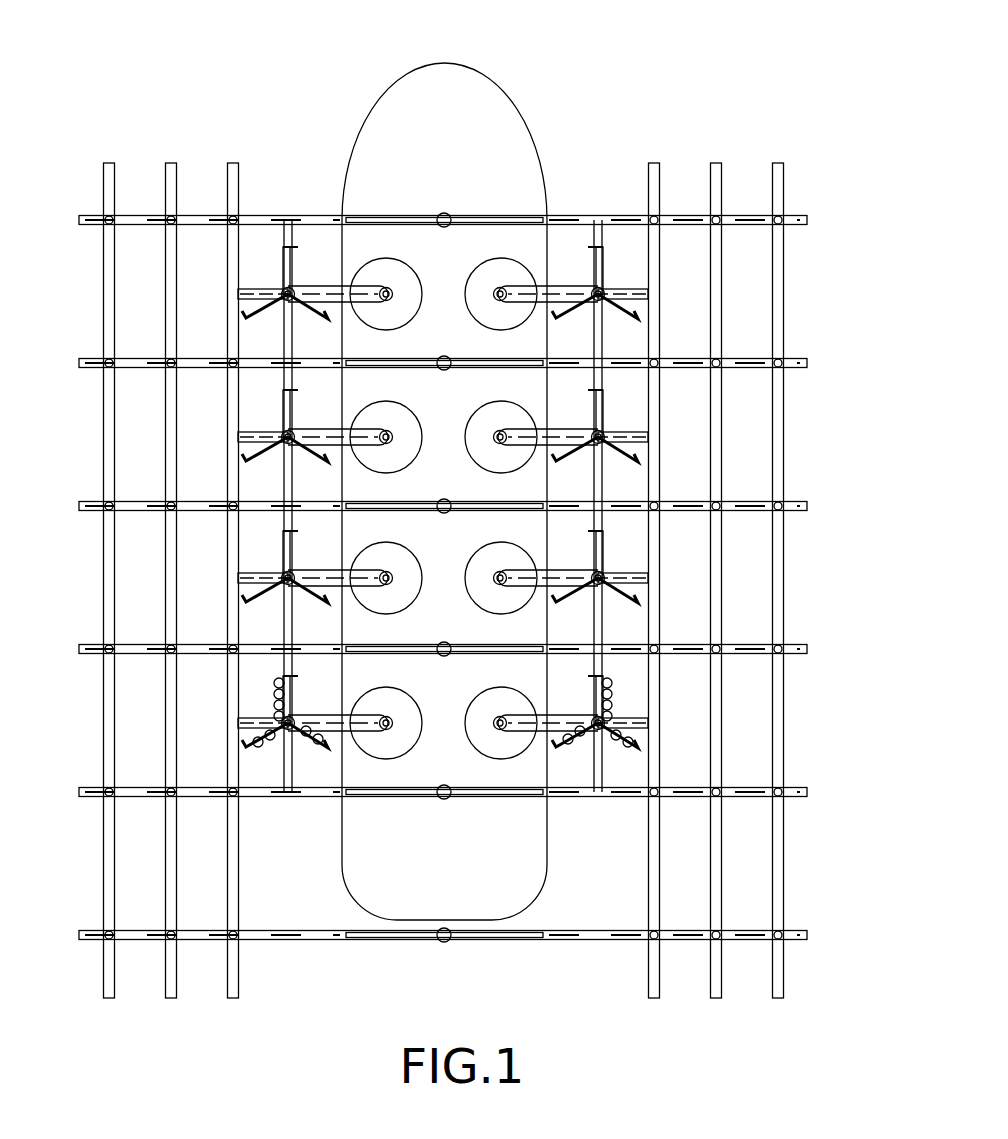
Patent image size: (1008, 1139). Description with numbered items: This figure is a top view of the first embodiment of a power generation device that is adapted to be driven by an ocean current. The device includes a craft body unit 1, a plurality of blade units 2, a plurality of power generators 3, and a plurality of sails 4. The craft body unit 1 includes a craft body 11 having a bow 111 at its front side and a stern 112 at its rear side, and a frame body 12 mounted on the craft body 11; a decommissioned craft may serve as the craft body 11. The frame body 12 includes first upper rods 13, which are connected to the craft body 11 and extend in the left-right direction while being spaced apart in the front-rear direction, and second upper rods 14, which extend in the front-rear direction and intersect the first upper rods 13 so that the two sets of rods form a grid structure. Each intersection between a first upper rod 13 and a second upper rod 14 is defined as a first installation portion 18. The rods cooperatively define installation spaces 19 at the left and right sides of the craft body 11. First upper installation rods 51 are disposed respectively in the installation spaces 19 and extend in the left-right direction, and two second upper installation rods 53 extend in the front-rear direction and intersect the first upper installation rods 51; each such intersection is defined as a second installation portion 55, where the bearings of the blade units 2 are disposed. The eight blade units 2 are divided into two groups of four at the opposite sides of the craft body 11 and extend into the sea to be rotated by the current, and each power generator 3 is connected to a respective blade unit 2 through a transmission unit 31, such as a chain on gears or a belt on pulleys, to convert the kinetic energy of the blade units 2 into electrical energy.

The craft body unit 1 is at (512, 86).
The craft body 11 is at (527, 121).
The bow 111 is at (452, 79).
The stern 112 is at (485, 905).
The frame body 12 is at (787, 139).
The first upper rods 13 is at (808, 220).
The second upper rods 14 is at (168, 284).
The first installation portion 18 is at (110, 214).
The installation spaces 19 is at (255, 241).
The blade units 2 is at (276, 428).
The power generators 3 is at (377, 265).
The transmission unit 31 is at (323, 283).
The sails 4 is at (94, 214).
The first upper installation rods 51 is at (628, 572).
The second upper installation rods 53 is at (290, 625).
The second installation portion 55 is at (606, 437).